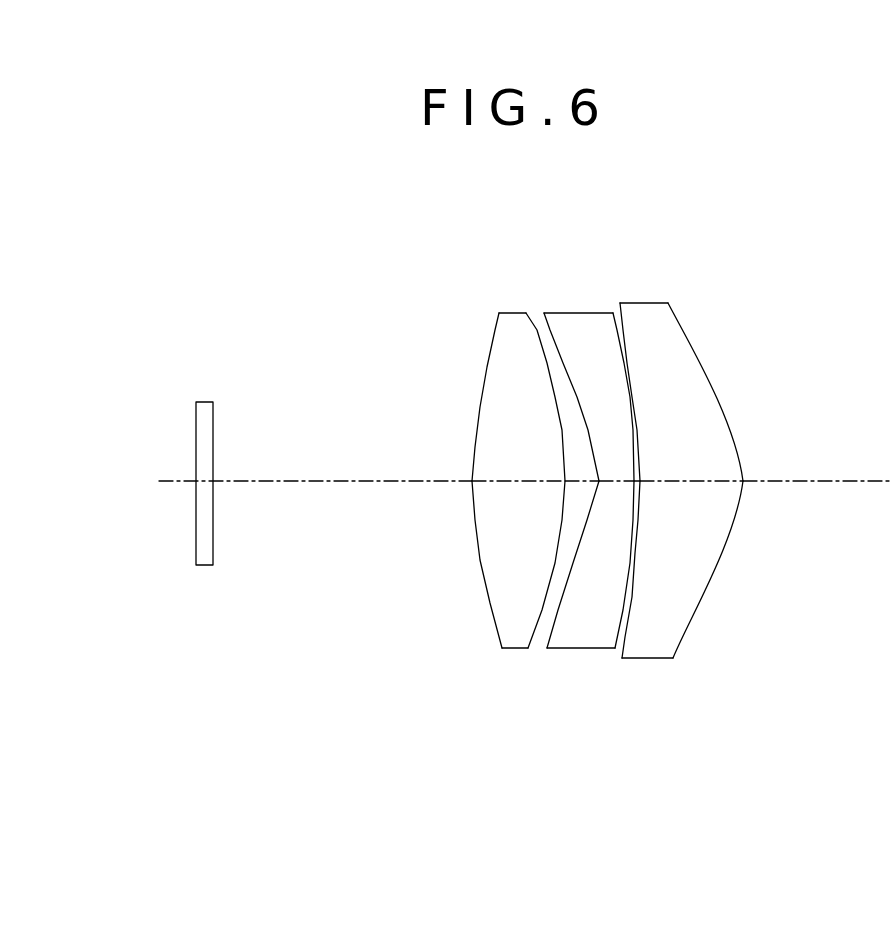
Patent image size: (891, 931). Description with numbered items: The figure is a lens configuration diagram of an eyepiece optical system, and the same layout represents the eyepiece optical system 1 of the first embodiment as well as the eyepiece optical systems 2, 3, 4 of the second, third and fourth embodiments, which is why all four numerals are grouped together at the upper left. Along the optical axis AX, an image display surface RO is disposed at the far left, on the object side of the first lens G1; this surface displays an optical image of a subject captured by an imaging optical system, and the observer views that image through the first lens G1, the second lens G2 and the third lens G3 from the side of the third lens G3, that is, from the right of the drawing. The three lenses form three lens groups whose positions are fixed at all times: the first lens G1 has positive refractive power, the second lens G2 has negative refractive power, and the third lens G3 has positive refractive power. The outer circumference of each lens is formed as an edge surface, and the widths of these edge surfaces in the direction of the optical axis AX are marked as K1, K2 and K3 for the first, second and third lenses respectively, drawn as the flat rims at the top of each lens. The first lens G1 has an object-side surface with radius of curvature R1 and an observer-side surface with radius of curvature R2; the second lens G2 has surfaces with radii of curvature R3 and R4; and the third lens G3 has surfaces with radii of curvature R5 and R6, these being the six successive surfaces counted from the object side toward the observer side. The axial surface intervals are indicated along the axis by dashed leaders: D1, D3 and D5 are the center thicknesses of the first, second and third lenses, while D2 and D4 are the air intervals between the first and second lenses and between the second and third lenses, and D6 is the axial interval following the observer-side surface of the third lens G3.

The eyepiece optical system 1 is at (303, 241).
The eyepiece optical system 2 is at (307, 191).
The eyepiece optical system 3 is at (335, 191).
The eyepiece optical system 4 is at (365, 191).
The optical axis AX is at (509, 525).
The image display surface RO is at (213, 545).
The first lens G1 is at (523, 313).
The second lens G2 is at (602, 313).
The third lens G3 is at (634, 303).
The edge surface thickness of first lens K1 is at (512, 313).
The edge surface thickness of second lens K2 is at (585, 313).
The edge surface thickness of third lens K3 is at (656, 303).
The radius of curvature of object-side surface of first lens R1 is at (497, 610).
The radius of curvature of observer-side surface of first lens R2 is at (533, 625).
The radius of curvature of object-side surface of second lens R3 is at (548, 600).
The radius of curvature of observer-side surface of second lens R4 is at (630, 595).
The radius of curvature of object-side surface of third lens R5 is at (633, 583).
The radius of curvature of observer-side surface of third lens R6 is at (690, 625).
The axial surface interval D1 is at (503, 483).
The axial surface interval D2 is at (565, 525).
The axial surface interval D3 is at (633, 528).
The axial surface interval D4 is at (640, 472).
The axial surface interval D5 is at (685, 485).
The axial surface interval D6 is at (806, 484).